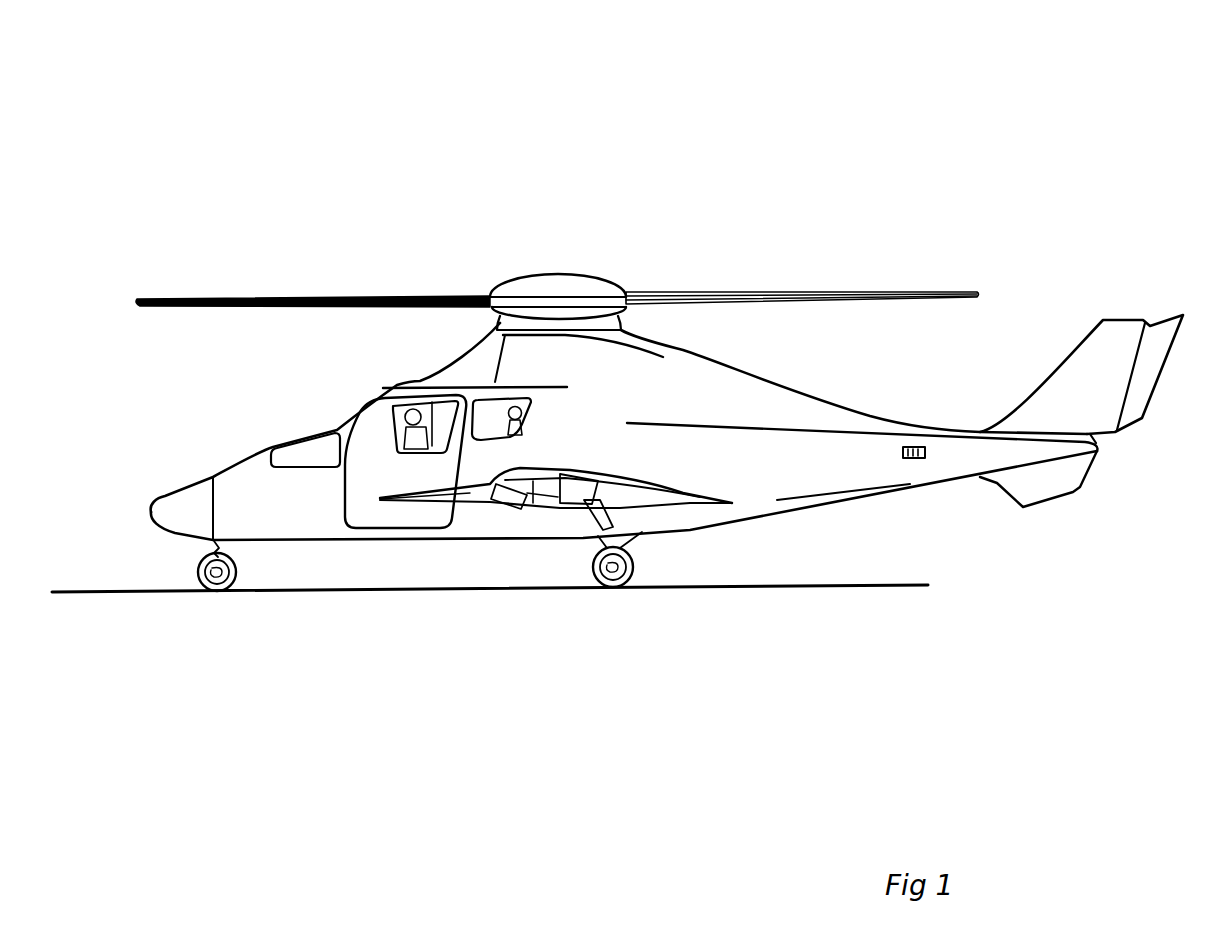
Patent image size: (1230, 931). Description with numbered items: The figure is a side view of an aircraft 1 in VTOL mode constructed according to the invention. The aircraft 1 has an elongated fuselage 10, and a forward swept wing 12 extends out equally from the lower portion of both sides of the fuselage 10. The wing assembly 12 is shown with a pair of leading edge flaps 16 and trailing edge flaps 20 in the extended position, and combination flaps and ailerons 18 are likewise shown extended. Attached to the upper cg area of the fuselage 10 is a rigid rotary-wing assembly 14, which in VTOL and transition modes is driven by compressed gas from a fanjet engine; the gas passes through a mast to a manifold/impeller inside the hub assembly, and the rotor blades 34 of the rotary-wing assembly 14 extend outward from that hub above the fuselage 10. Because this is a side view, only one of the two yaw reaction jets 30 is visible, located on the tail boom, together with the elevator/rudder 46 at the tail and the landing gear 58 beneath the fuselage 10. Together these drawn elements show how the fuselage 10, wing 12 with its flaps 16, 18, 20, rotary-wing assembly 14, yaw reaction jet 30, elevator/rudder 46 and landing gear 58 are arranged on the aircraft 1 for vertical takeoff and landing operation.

The aircraft 1 is at (642, 155).
The fuselage 10 is at (737, 390).
The forward swept wing 12 is at (533, 505).
The rigid rotary-wing assembly 14 is at (557, 273).
The leading edge flaps 16 is at (505, 498).
The combination flaps and ailerons 18 is at (561, 508).
The trailing edge flaps 20 is at (590, 505).
The yaw reaction jet 30 is at (922, 459).
The rotor blade 34 is at (245, 296).
The elevator/rudder 46 is at (1145, 393).
The landing gear 58 is at (220, 595).